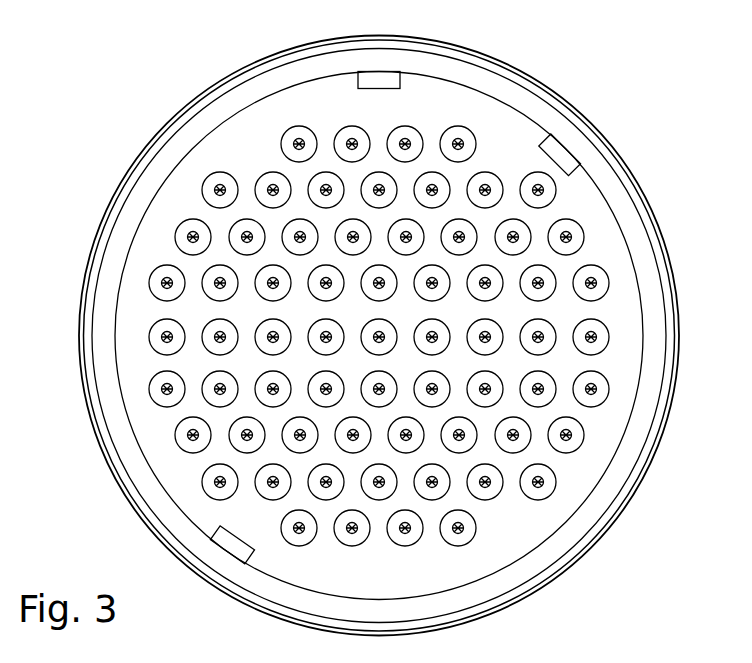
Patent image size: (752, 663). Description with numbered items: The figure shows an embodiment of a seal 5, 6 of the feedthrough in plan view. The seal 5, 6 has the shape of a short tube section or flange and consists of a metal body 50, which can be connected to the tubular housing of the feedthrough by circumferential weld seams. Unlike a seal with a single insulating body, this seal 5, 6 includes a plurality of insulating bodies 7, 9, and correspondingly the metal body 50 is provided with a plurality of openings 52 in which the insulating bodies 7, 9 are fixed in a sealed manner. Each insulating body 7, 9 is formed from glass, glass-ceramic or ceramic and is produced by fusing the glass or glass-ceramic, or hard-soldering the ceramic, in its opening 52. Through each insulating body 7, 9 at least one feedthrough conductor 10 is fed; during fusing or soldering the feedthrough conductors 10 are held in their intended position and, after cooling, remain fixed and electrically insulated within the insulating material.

The seal 5 is at (697, 599).
The seal 6 is at (395, 336).
The insulating body 7 is at (499, 179).
The insulating body 9 is at (554, 127).
The feedthrough conductor 10 is at (568, 236).
The metal body 50 is at (615, 148).
The opening 52 is at (463, 127).